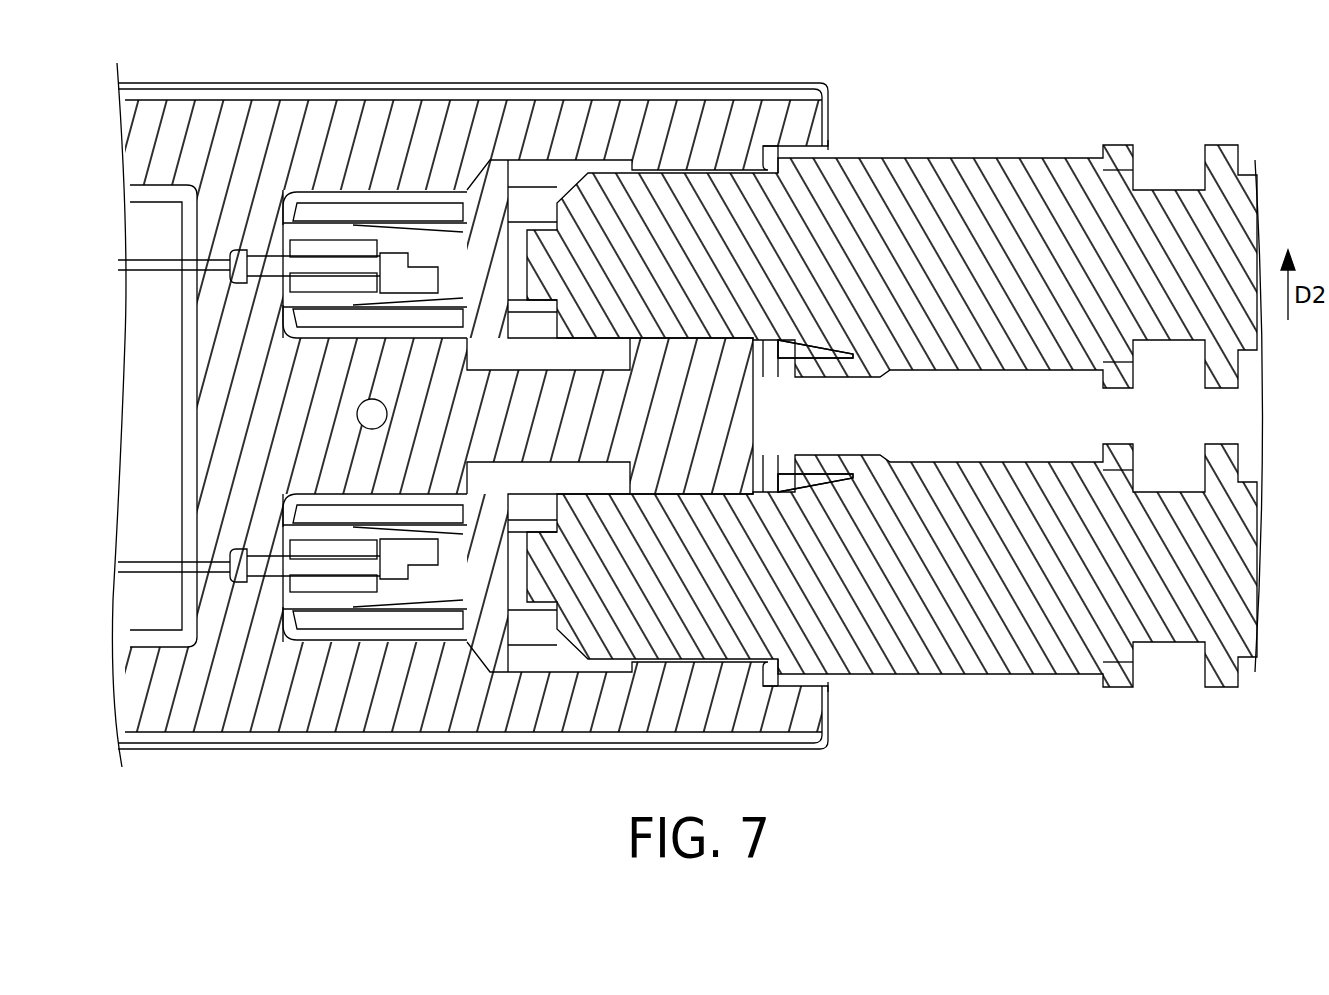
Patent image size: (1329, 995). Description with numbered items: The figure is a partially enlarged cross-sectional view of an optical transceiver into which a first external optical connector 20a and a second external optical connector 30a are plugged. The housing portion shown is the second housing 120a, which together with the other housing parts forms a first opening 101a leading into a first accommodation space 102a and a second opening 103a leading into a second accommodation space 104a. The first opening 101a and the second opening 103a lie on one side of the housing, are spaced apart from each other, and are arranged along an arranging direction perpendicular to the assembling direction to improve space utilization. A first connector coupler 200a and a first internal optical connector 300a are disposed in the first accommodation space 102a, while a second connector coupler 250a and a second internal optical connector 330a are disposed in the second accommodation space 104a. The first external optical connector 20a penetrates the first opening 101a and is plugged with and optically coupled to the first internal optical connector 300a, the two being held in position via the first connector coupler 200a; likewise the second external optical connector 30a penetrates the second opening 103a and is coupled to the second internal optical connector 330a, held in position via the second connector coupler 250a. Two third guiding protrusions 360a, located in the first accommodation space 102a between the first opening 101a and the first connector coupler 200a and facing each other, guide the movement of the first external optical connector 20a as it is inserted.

The second housing 120a is at (606, 733).
The second external optical connector 30a is at (988, 147).
The first external optical connector 20a is at (988, 682).
The second connector coupler 250a is at (410, 191).
The first connector coupler 200a is at (397, 637).
The second internal optical connector 330a is at (225, 255).
The first internal optical connector 300a is at (225, 578).
The second accommodation space 104a is at (774, 157).
The second opening 103a is at (830, 148).
The first opening 101a is at (835, 683).
The first accommodation space 102a is at (778, 676).
The third guiding protrusions 360a is at (703, 473).